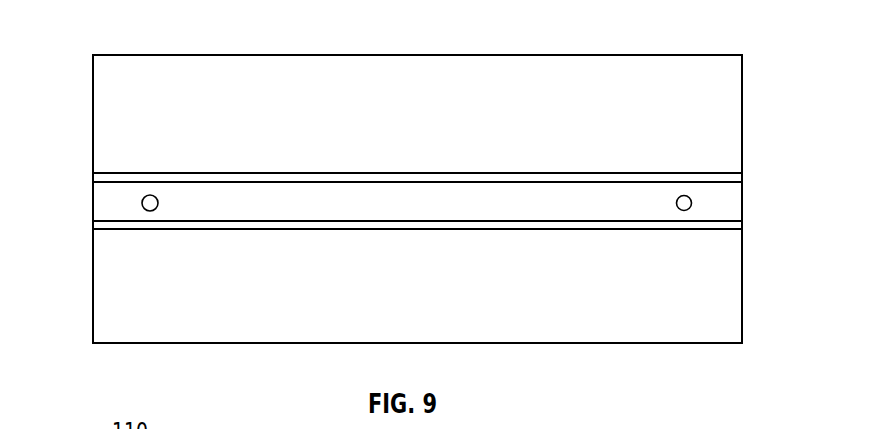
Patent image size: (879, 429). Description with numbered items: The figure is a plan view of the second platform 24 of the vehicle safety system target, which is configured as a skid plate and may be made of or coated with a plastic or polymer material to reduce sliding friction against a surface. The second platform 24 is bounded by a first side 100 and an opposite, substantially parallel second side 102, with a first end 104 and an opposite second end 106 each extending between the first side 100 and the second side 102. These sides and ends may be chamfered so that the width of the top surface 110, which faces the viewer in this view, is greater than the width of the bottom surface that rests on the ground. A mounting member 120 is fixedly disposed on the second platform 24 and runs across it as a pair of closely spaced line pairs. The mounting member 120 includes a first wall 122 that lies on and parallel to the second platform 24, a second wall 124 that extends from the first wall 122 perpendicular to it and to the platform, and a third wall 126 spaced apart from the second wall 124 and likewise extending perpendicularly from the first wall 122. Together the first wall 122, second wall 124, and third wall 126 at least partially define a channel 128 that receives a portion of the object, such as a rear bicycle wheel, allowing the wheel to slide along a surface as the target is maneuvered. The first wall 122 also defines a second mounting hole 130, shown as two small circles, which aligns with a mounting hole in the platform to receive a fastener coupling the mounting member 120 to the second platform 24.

The second platform 24 is at (723, 317).
The first side 100 is at (522, 344).
The second side 102 is at (477, 55).
The first end 104 is at (743, 82).
The second end 106 is at (92, 105).
The top surface 110 is at (546, 72).
The mounting member 120 is at (714, 237).
The first wall 122 is at (733, 207).
The second wall 124 is at (737, 225).
The third wall 126 is at (737, 178).
The channel 128 is at (702, 196).
The second mounting hole 130 is at (150, 195).